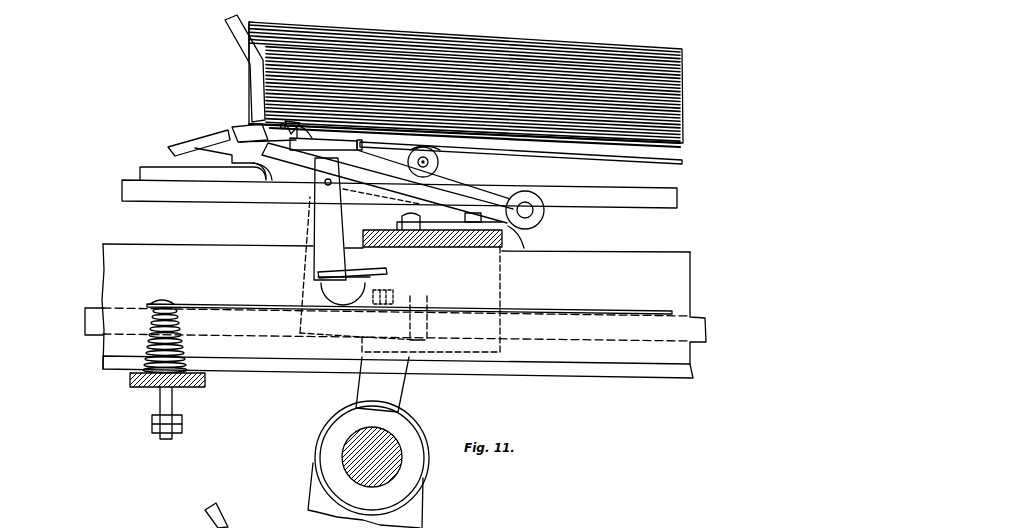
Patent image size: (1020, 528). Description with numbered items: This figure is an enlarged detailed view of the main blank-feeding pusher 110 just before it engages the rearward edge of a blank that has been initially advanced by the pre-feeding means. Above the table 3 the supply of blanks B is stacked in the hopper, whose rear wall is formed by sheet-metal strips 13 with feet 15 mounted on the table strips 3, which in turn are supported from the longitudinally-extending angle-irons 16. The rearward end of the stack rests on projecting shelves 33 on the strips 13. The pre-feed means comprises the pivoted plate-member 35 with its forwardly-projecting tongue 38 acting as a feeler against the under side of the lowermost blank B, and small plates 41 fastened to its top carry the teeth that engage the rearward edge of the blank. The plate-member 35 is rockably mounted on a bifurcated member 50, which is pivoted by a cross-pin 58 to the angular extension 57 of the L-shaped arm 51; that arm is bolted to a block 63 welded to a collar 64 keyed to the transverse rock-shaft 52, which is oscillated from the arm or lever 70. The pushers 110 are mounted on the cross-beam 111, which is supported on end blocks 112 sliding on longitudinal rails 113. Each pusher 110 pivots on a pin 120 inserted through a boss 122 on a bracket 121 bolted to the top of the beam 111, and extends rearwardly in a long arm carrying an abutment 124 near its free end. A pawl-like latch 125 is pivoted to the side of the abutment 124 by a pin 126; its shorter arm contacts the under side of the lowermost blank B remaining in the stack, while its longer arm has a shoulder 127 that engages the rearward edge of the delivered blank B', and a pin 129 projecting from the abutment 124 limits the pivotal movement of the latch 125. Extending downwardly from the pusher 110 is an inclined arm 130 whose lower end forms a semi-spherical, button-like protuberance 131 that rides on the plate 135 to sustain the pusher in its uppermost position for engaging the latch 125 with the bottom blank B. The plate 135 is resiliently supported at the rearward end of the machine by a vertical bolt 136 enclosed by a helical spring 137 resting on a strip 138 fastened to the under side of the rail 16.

The blanks B is at (466, 79).
The delivered blank B' is at (519, 155).
The table 3 is at (240, 190).
The sheet-metal strips 13 is at (240, 38).
The feet 15 is at (161, 175).
The angle-irons 16 is at (208, 256).
The projecting shelves 33 is at (338, 133).
The pivoted rest or member 35 is at (264, 162).
The extension or tongue 38 is at (366, 138).
The plates 41 is at (314, 133).
The rockable member 50 is at (436, 152).
The L-shaped arm 51 is at (348, 221).
The rock-shaft 52 is at (390, 467).
The angular extension 57 is at (400, 172).
The cross-pin 58 is at (430, 167).
The block 63 is at (395, 393).
The collar 64 is at (408, 440).
The arm or lever 70 is at (422, 512).
The pusher 110 is at (236, 129).
The cross-beam 111 is at (478, 240).
The end blocks 112 is at (502, 293).
The rails 113 is at (85, 319).
The pins 120 is at (532, 213).
The brackets 121 is at (523, 248).
The bosses 122 is at (534, 205).
The abutment 124 is at (230, 132).
The pawl-like latch 125 is at (255, 146).
The pin 126 is at (279, 125).
The shoulder 127 is at (280, 149).
The pin 129 is at (258, 127).
The inclined arm 130 is at (326, 250).
The semi-spherical protuberance 131 is at (330, 292).
The plate 135 is at (600, 300).
The vertical pin or bolt 136 is at (162, 400).
The helical spring 137 is at (150, 348).
The strip 138 is at (130, 379).